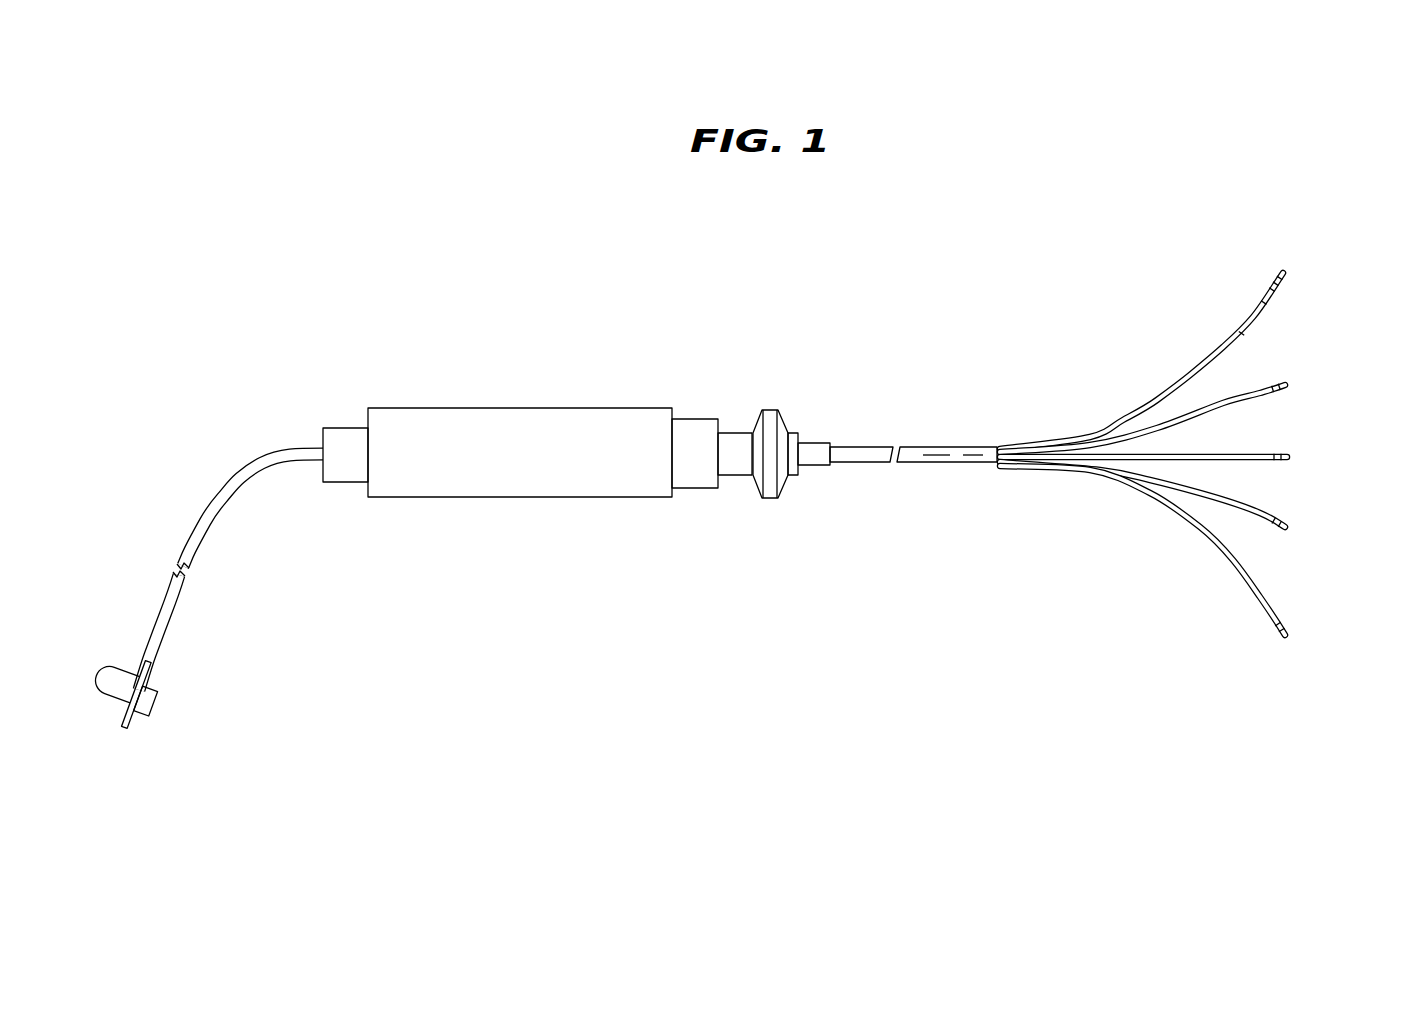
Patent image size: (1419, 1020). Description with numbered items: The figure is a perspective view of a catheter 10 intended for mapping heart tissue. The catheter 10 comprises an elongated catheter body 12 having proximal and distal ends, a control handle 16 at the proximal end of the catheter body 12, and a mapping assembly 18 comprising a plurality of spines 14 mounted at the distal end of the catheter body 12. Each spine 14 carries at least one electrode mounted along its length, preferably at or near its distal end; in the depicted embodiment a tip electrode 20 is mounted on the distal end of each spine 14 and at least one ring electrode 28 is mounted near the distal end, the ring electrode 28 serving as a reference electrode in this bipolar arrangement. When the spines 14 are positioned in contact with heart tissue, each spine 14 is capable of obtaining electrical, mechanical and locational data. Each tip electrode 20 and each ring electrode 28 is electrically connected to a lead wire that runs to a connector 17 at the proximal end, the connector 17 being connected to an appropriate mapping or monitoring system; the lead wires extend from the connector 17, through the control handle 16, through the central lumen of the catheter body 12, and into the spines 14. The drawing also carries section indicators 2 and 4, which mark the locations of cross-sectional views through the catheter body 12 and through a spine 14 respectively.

The catheter 10 is at (660, 427).
The catheter body 12 is at (857, 463).
The spines 14 is at (1058, 467).
The control handle 16 is at (538, 485).
The connector 17 is at (112, 713).
The mapping assembly 18 is at (1182, 255).
The tip electrode 20 is at (1285, 277).
The ring electrode 28 is at (1273, 295).
The section line 2 is at (921, 452).
The section line 4 is at (1213, 360).